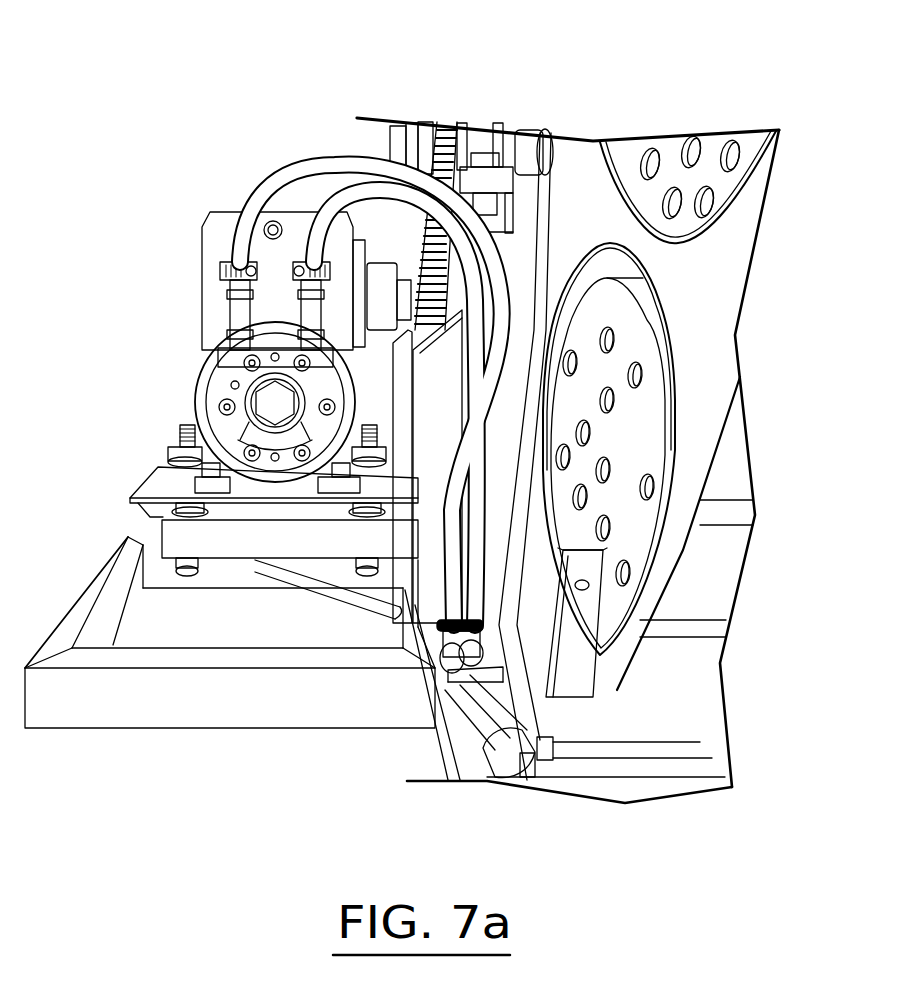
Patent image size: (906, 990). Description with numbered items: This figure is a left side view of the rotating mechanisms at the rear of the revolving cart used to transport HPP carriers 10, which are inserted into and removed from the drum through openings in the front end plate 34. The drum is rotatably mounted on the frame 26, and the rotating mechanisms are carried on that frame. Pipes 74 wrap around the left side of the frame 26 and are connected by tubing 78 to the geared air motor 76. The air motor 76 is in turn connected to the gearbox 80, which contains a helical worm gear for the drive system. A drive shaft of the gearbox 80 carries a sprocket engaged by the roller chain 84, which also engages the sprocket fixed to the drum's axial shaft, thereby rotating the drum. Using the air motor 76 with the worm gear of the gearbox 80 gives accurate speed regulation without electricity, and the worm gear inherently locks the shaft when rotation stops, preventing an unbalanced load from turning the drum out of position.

The HPP carrier 10 is at (650, 442).
The frame 26 is at (85, 707).
The front end plate 34 is at (722, 290).
The pipes 74 is at (498, 707).
The air motor 76 is at (213, 393).
The tubing 78 is at (358, 172).
The gearbox 80 is at (223, 232).
The roller chain 84 is at (422, 120).